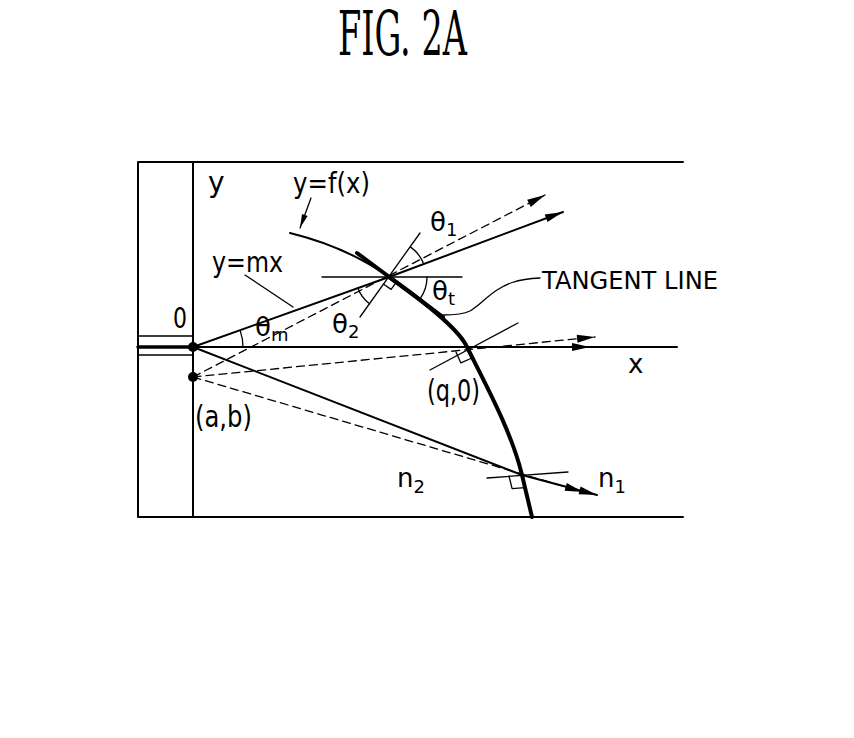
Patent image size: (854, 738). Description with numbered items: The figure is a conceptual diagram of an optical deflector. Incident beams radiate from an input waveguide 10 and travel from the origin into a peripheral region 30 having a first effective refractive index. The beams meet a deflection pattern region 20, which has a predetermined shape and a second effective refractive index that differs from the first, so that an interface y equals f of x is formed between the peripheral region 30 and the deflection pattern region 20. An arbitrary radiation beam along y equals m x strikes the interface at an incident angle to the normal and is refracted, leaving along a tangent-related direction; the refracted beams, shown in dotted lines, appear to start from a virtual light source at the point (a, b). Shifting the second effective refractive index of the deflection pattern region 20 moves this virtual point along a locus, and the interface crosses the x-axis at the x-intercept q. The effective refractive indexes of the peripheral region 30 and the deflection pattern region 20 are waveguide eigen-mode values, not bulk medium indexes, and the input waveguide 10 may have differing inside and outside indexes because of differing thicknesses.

The input waveguide 10 is at (120, 343).
The deflection pattern region 20 is at (457, 498).
The peripheral region 30 is at (648, 213).